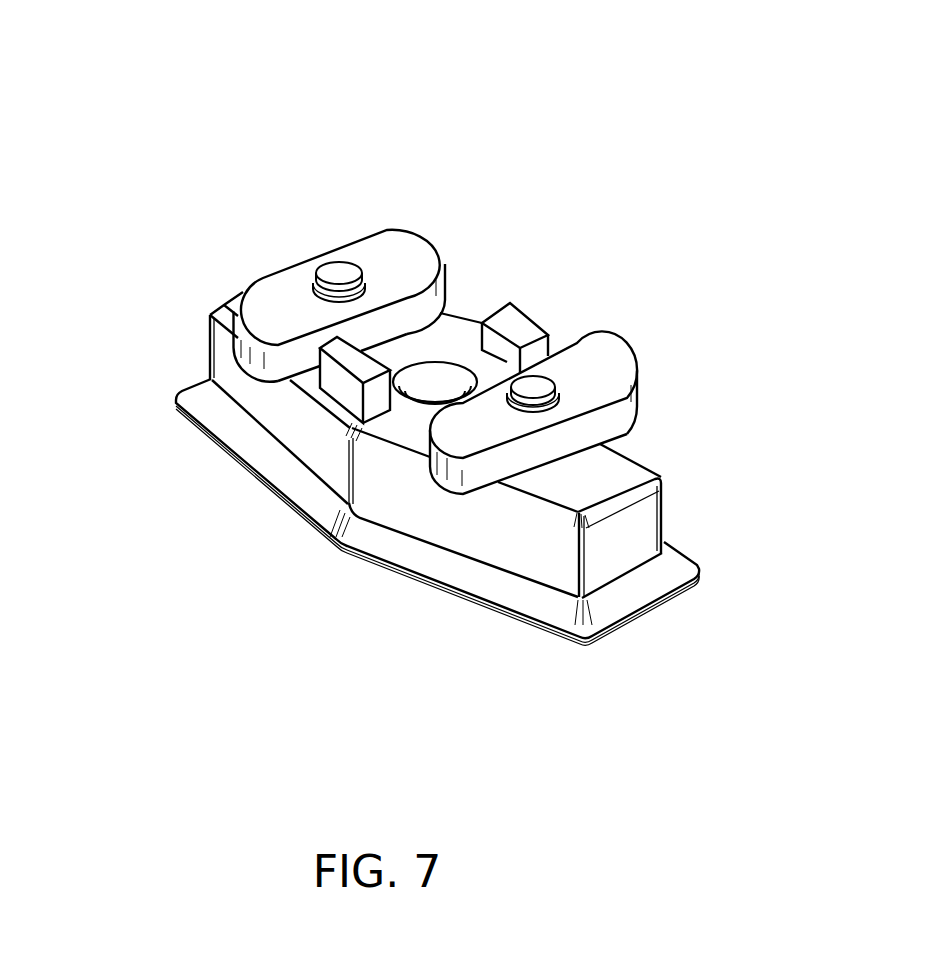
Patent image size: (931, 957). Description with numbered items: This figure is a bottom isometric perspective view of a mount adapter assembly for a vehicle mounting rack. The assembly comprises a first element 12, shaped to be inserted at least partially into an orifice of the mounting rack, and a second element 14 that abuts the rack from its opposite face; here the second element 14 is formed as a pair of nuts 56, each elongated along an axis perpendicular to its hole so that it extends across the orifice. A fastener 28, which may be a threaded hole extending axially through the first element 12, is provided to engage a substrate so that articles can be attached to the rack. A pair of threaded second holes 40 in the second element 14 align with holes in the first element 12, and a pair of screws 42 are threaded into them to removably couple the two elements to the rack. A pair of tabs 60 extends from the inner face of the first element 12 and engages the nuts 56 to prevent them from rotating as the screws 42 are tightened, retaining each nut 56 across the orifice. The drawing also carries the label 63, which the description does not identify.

The first element 12 is at (410, 513).
The second element 14 is at (496, 373).
The nut 56 is at (577, 343).
The fastener 28 is at (440, 380).
The second holes 40 is at (250, 283).
The screws 42 is at (336, 265).
The tabs 60 is at (499, 343).
The raised end portion 63 is at (563, 497).